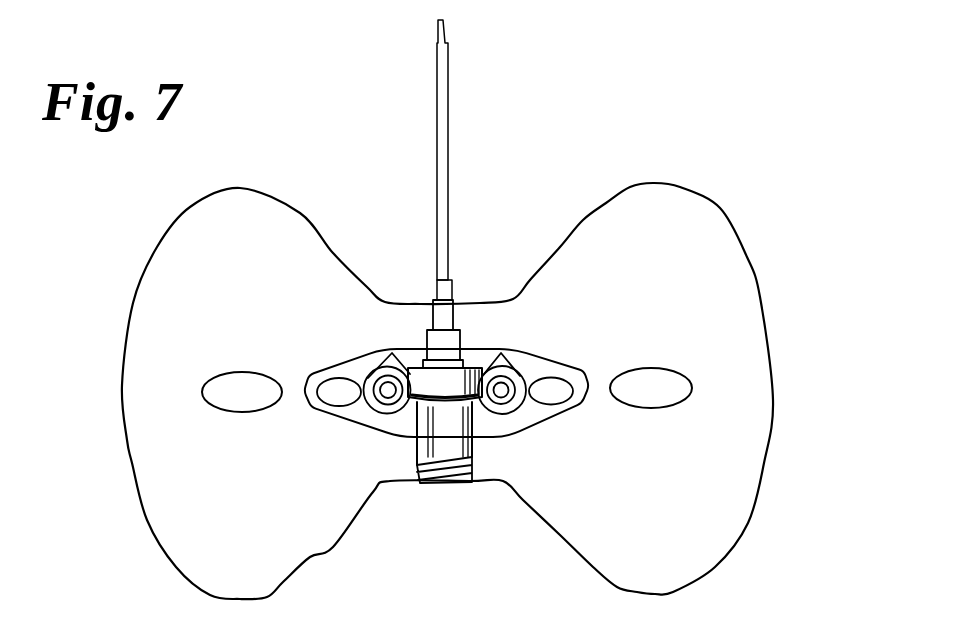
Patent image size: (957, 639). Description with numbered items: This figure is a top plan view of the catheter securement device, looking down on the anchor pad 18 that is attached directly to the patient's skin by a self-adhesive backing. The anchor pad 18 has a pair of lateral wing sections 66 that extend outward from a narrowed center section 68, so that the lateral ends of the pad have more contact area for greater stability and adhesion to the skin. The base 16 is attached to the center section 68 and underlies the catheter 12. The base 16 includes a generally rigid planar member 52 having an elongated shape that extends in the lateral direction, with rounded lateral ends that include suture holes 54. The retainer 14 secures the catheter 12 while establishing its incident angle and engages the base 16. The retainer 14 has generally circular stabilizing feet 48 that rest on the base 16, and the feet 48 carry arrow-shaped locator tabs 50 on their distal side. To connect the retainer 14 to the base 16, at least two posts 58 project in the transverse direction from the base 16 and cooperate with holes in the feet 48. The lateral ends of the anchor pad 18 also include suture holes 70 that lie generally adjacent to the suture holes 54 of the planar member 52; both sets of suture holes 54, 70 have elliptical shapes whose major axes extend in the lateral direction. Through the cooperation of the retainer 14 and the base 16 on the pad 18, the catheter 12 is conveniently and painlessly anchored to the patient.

The catheter 12 is at (449, 88).
The retainer 14 is at (491, 422).
The base 16 is at (479, 358).
The anchor pad 18 is at (722, 208).
The feet 48 is at (378, 412).
The locator tabs 50 is at (387, 365).
The planar member 52 is at (537, 360).
The suture holes 54 is at (333, 395).
The posts 58 is at (383, 385).
The lateral wing sections 66 is at (140, 452).
The center section 68 is at (390, 468).
The suture holes 70 is at (243, 403).